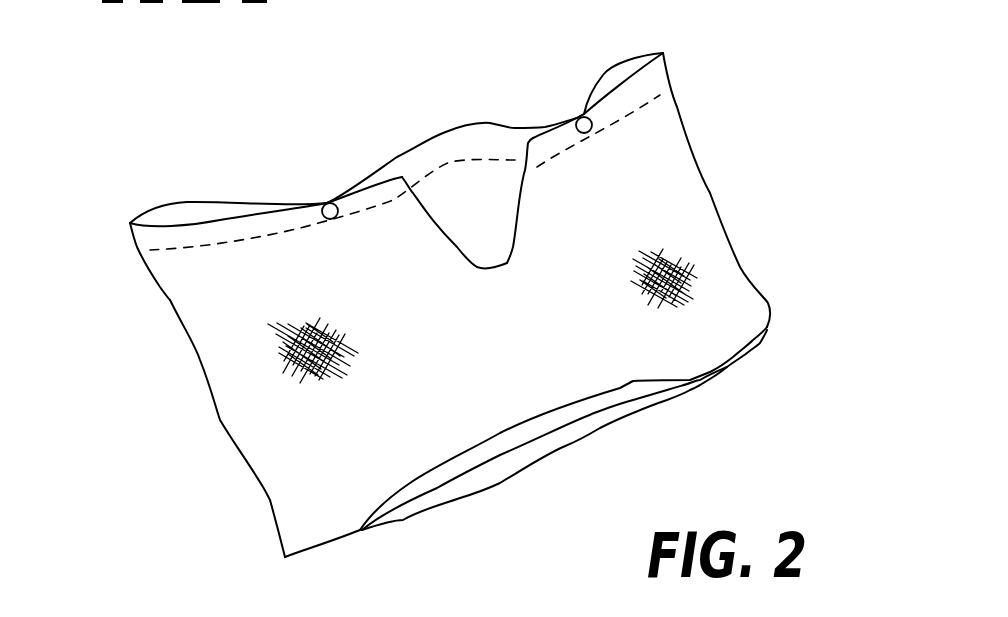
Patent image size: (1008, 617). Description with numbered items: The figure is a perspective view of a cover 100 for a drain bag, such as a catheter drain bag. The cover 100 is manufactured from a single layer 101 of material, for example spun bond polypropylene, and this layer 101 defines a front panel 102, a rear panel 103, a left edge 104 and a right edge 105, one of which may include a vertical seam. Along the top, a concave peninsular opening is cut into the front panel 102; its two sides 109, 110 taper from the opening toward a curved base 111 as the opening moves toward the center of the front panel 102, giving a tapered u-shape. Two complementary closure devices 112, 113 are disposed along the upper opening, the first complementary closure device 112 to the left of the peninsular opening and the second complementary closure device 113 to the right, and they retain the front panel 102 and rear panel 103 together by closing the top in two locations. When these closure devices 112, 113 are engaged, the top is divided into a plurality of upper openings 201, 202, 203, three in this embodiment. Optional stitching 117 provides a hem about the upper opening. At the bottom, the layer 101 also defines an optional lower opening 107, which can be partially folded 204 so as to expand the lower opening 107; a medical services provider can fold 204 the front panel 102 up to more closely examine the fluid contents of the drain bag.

The cover 100 is at (116, 361).
The layer of material 101 is at (660, 290).
The front panel 102 is at (493, 365).
The rear panel 103 is at (488, 212).
The left edge 104 is at (200, 363).
The right edge 105 is at (710, 193).
The lower opening 107 is at (572, 443).
The side of the concave peninsular opening 109 is at (433, 223).
The side of the concave peninsular opening 110 is at (524, 193).
The curved base 111 is at (500, 268).
The first complementary closure device 112 is at (329, 202).
The second complementary closure device 113 is at (580, 116).
The stitching 117 is at (195, 252).
The upper opening 201 is at (191, 208).
The upper opening 202 is at (445, 151).
The upper opening 203 is at (613, 75).
The fold 204 is at (553, 392).